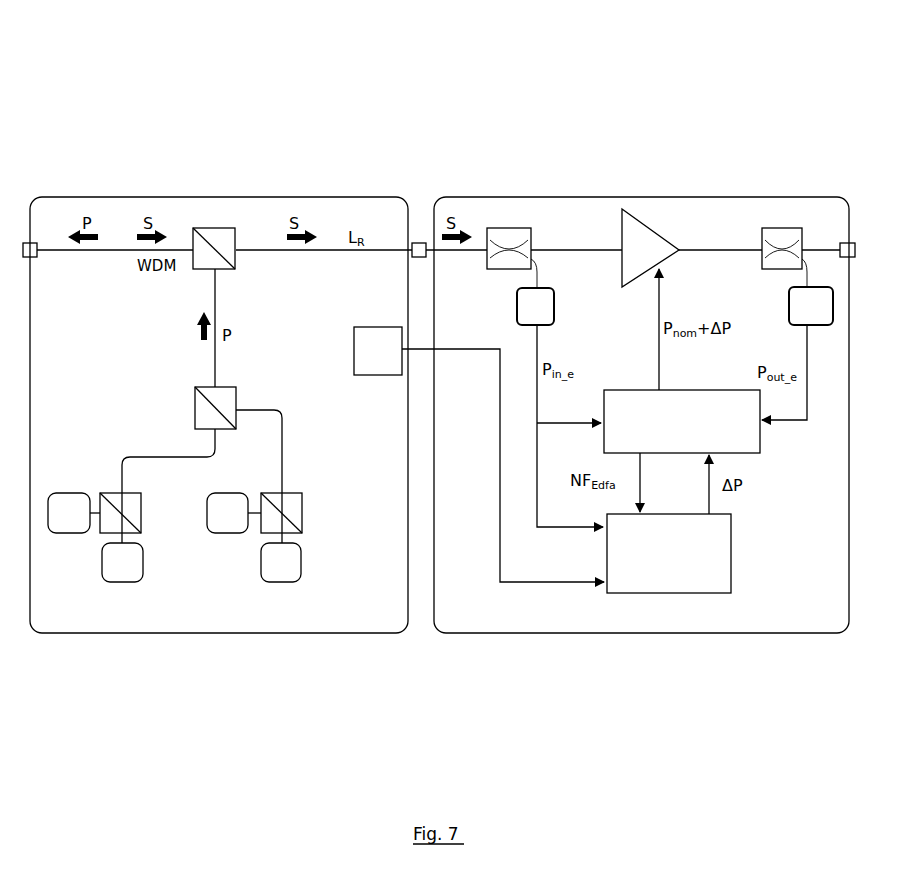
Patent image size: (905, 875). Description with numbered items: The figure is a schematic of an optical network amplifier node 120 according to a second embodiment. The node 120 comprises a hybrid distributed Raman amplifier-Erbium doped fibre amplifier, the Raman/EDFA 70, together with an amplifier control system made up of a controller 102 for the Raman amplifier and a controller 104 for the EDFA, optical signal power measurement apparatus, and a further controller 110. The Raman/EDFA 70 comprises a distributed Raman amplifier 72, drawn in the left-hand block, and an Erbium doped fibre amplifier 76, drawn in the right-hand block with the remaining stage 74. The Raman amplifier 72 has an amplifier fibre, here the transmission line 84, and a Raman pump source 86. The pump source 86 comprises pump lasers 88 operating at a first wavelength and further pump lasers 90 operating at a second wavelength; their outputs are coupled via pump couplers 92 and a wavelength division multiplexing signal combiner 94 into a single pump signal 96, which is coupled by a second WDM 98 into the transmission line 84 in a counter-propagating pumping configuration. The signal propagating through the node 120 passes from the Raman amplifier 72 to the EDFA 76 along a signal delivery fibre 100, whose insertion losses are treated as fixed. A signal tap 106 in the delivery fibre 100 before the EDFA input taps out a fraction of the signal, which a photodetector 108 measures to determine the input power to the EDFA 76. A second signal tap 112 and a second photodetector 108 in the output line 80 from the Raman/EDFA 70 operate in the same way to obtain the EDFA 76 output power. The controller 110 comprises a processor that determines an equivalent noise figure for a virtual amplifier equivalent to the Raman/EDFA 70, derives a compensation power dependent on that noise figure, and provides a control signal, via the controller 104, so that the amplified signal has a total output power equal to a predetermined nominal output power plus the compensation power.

The hybrid distributed Raman amplifier-Erbium doped fibre amplifier (Raman/EDFA) 70 is at (547, 60).
The distributed Raman amplifier 72 is at (212, 197).
The EDFA amplifier stage 74 is at (363, 220).
The Erbium doped fibre amplifier (EDFA) 76 is at (637, 217).
The output line 80 is at (730, 250).
The transmission line 84 is at (74, 257).
The Raman pump source 86 is at (130, 428).
The pump laser 88 is at (62, 533).
The pump laser lambda 2 90 is at (225, 533).
The pump coupler (PC) 92 is at (141, 508).
The wavelength division multiplexing signal combiner (WDM) 94 is at (235, 387).
The pump signal 96 is at (215, 300).
The second WDM 98 is at (220, 228).
The signal delivery fibre 100 is at (331, 257).
The controller for the Raman amplifier 102 is at (378, 375).
The controller for the EDFA 104 is at (748, 446).
The signal tap 106 is at (509, 228).
The photodetector (PD) 108 is at (554, 303).
The controller 110 is at (720, 570).
The second signal tap 112 is at (783, 228).
The optical network amplifier node 120 is at (308, 700).